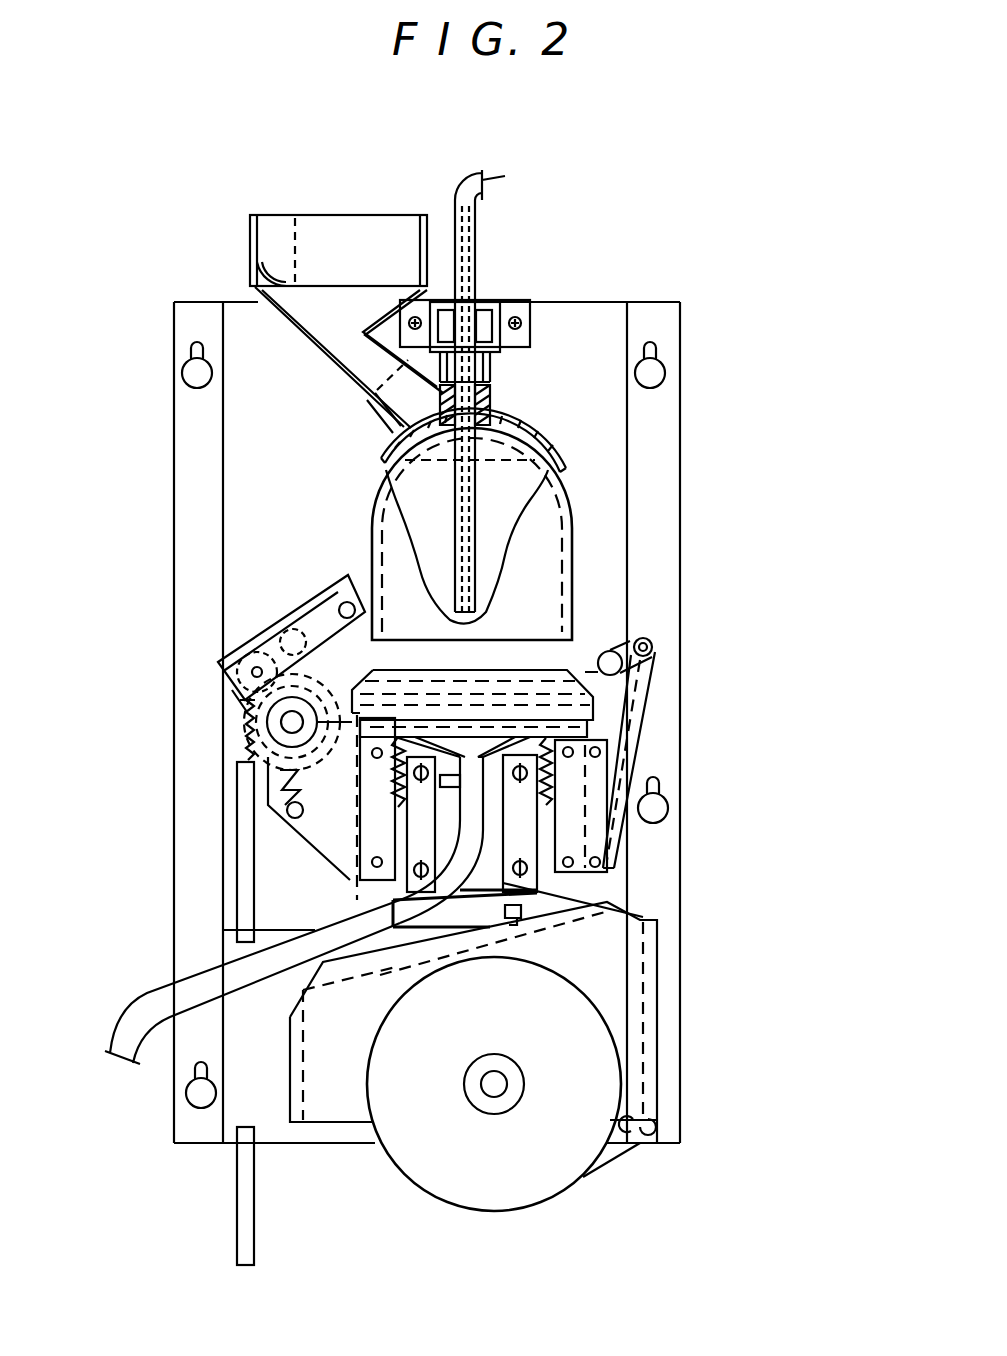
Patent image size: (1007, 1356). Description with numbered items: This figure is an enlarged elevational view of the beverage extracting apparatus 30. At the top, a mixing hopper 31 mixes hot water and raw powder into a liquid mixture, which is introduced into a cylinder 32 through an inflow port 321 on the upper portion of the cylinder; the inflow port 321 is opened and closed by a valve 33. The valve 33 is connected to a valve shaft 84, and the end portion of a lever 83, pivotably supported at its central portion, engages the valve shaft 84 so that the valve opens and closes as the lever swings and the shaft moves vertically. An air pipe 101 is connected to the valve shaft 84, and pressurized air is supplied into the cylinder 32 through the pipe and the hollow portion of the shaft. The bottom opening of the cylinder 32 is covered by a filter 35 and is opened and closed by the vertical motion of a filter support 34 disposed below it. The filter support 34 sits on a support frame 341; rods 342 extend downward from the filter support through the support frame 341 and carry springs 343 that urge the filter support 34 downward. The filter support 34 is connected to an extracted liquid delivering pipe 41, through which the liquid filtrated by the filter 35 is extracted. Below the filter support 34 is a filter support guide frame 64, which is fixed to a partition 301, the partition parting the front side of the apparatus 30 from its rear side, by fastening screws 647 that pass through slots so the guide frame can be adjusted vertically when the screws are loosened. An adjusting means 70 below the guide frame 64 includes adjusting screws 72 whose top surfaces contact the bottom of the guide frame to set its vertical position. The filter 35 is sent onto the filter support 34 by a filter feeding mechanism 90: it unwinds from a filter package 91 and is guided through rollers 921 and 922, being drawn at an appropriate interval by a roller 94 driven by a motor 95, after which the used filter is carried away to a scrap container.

The beverage extracting apparatus 30 is at (427, 783).
The mixing hopper 31 is at (320, 228).
The inflow port 321 is at (400, 417).
The air pipe 101 is at (470, 245).
The lever 83 is at (500, 300).
The valve 33 is at (540, 440).
The cylinder 32 is at (573, 550).
The valve shaft 84 is at (450, 490).
The roller 922 is at (613, 652).
The roller 921 is at (650, 641).
The roller 94 is at (247, 705).
The motor 95 is at (243, 742).
The filter support 34 is at (590, 705).
The support frame 341 is at (370, 840).
The fastening screws 647 is at (432, 876).
The springs 343 is at (555, 772).
The rods 342 is at (580, 846).
The adjusting means 70 is at (474, 908).
The extracted liquid delivering pipe 41 is at (150, 995).
The adjusting screws 72 is at (513, 922).
The filter 35 is at (612, 890).
The partition 301 is at (640, 927).
The filter support guide frame 64 is at (660, 955).
The filter package 91 is at (438, 1185).
The filter feeding mechanism 90 is at (390, 1172).